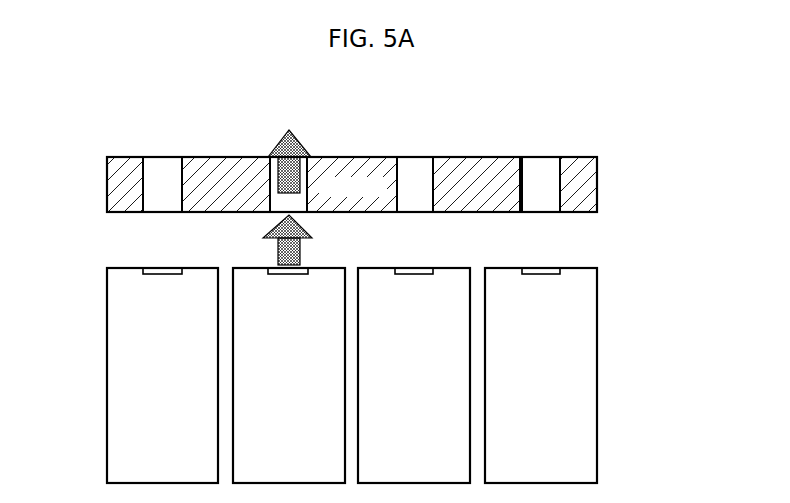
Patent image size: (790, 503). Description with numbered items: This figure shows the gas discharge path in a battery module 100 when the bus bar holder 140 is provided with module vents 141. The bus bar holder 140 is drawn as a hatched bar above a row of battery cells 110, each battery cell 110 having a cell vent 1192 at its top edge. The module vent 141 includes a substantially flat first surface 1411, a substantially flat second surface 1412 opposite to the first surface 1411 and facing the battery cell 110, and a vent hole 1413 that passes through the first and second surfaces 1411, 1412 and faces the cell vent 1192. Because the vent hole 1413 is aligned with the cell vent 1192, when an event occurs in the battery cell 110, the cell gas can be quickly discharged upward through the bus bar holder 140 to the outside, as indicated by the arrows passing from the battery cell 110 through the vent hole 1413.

The battery module 100 is at (90, 134).
The battery cell 110 is at (588, 328).
The cell vent 1192 is at (548, 275).
The bus bar holder 140 is at (604, 182).
The module vent 141 is at (547, 146).
The first surface 1411 is at (471, 157).
The second surface 1412 is at (470, 212).
The vent hole 1413 is at (541, 205).